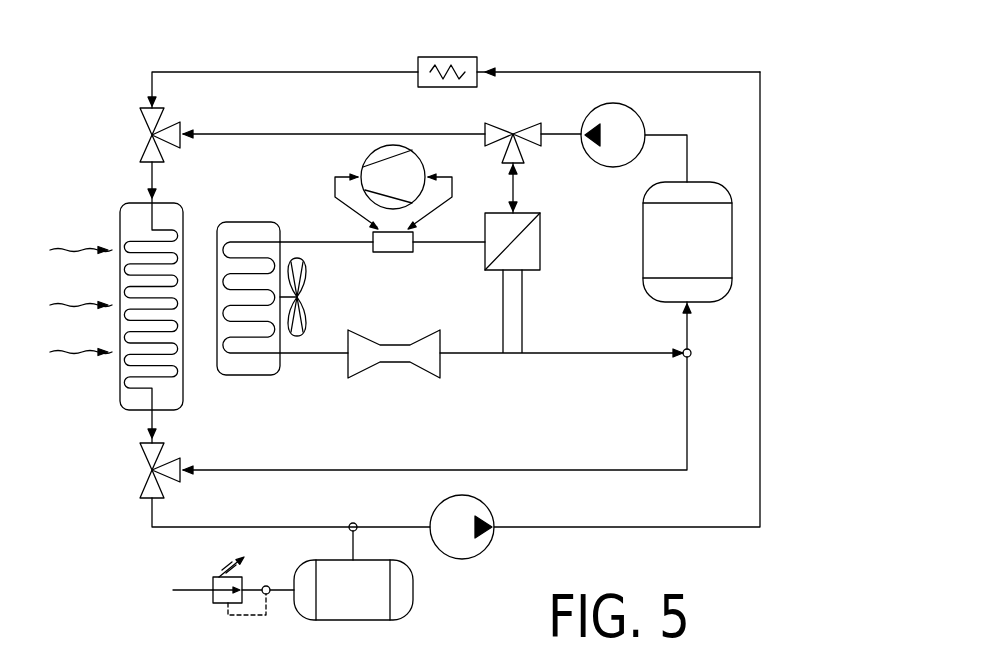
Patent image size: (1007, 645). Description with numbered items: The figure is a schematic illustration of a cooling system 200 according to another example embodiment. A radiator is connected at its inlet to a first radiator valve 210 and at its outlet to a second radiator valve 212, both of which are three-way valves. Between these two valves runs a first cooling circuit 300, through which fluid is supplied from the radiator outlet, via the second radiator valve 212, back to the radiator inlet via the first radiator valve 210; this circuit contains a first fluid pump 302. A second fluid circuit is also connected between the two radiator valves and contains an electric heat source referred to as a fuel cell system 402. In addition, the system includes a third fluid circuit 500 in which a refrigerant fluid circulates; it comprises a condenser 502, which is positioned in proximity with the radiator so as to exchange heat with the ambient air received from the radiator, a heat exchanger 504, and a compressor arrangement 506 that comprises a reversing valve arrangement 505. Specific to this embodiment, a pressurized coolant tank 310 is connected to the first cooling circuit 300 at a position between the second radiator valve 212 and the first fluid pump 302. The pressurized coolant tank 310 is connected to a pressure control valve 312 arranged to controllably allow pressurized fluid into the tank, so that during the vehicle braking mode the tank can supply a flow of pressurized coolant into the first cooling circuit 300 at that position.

The cooling system 200 is at (232, 47).
The first radiator valve 210 is at (145, 148).
The second radiator valve 212 is at (145, 483).
The first cooling circuit 300 is at (731, 527).
The first fluid pump 302 is at (492, 533).
The pressurized coolant tank 310 is at (413, 590).
The pressure control valve 312 is at (212, 582).
The fuel cell system 402 is at (735, 241).
The third fluid circuit 500 is at (470, 353).
The condenser 502 is at (250, 221).
The heat exchanger 504 is at (540, 242).
The reversing valve arrangement 505 is at (395, 252).
The compressor arrangement 506 is at (372, 152).